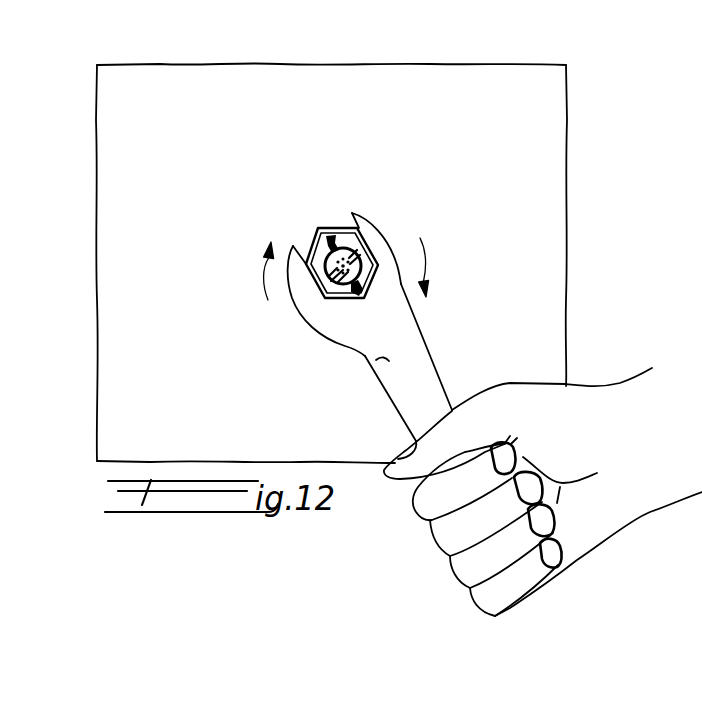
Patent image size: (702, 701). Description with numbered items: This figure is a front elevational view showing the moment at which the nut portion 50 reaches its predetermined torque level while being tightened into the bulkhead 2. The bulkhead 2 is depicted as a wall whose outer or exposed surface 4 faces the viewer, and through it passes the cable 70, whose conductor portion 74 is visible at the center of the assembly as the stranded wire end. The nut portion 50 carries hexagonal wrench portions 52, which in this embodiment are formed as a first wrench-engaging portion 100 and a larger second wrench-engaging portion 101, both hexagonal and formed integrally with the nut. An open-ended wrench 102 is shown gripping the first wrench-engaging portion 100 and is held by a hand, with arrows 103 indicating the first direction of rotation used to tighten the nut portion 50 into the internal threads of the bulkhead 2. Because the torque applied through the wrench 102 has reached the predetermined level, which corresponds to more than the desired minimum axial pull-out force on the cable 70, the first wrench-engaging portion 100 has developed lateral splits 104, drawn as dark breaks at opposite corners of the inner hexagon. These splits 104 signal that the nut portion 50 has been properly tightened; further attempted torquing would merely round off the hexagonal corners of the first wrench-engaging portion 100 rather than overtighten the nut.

The bulkhead 2 is at (137, 198).
The outer surface 4 is at (262, 108).
The nut portion 50 is at (295, 211).
The hexagonal wrench portions 52 is at (388, 236).
The cable 70 is at (268, 323).
The conductor portion 74 is at (292, 298).
The first wrench-engaging portion 100 is at (318, 250).
The second wrench-engaging portion 101 is at (322, 228).
The open-ended wrench 102 is at (362, 368).
The arrows 103 is at (261, 266).
The lateral splits 104 is at (337, 240).